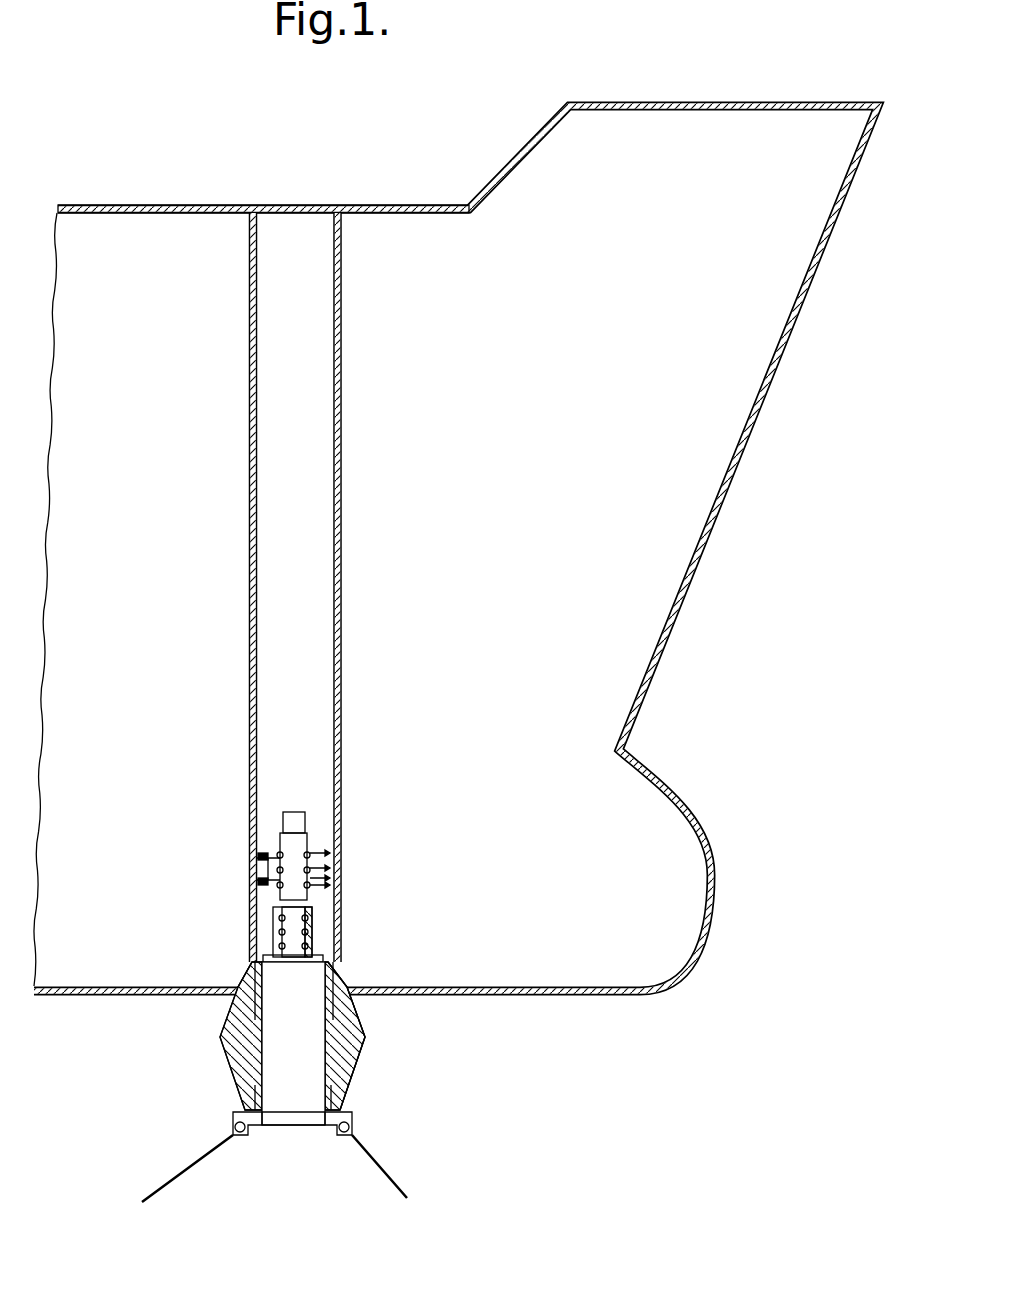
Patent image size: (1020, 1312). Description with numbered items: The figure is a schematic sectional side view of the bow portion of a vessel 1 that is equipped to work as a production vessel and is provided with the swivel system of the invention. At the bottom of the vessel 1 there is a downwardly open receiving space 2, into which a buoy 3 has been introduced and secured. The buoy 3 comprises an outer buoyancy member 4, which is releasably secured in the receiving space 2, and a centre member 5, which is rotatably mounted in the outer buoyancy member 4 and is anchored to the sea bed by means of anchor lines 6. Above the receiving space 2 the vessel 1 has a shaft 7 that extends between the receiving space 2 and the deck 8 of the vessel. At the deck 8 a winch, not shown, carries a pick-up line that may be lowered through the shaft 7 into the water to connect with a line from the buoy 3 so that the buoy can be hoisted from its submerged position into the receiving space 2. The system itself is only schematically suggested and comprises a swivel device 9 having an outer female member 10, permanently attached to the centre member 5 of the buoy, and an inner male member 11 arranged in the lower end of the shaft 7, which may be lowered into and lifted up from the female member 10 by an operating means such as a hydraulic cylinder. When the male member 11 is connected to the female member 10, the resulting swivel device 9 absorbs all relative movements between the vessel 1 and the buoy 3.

The vessel 1 is at (668, 640).
The receiving space 2 is at (342, 980).
The buoy 3 is at (223, 1073).
The outer buoyancy member 4 is at (348, 1063).
The centre member 5 is at (305, 1085).
The anchor lines 6 is at (178, 1174).
The shaft 7 is at (312, 520).
The deck 8 is at (182, 205).
The swivel device 9 is at (268, 908).
The female member 10 is at (315, 925).
The male member 11 is at (310, 880).